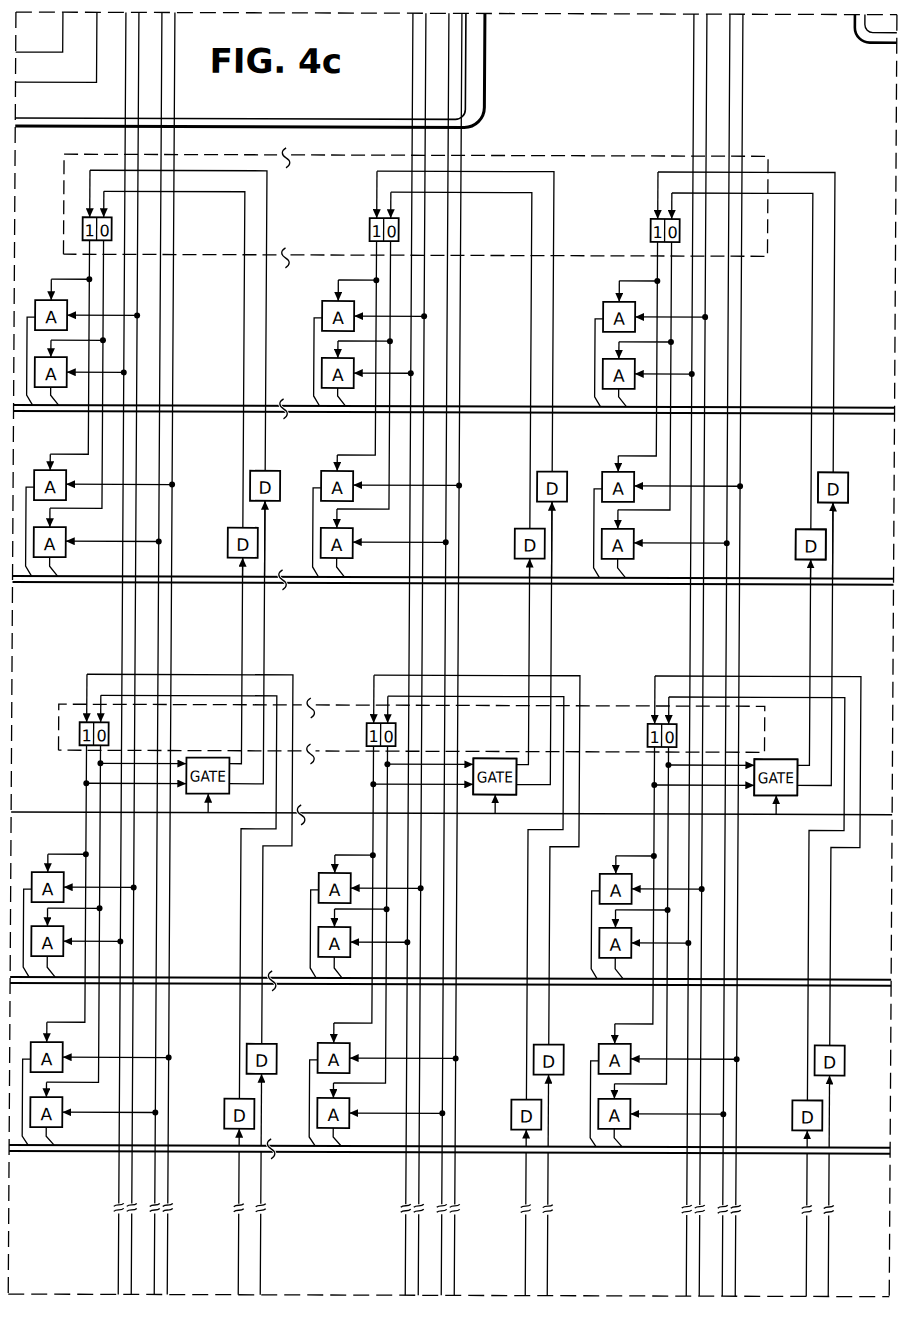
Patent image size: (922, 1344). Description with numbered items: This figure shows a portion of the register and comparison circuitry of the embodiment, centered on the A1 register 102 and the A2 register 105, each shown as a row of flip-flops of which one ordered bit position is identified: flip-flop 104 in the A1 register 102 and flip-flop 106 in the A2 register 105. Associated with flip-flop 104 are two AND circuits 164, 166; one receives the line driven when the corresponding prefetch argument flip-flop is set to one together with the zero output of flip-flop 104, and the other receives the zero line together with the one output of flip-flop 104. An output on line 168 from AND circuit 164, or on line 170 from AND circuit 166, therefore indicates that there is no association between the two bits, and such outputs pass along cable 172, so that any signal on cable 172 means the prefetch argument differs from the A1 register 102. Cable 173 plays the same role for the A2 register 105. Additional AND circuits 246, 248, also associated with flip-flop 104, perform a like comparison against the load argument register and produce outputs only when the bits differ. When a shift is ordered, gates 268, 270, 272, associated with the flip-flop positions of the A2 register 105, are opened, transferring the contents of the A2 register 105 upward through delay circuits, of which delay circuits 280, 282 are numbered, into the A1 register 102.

The A1 register 102 is at (65, 180).
The flip-flop 104 is at (84, 228).
The A2 register 105 is at (63, 704).
The flip-flop 106 is at (84, 742).
The AND circuit 164 is at (36, 310).
The AND circuit 166 is at (48, 281).
The output line 168 is at (60, 412).
The output line 170 is at (33, 412).
The cable 172 is at (222, 405).
The cable 173 is at (199, 977).
The AND circuit 246 is at (44, 470).
The AND circuit 248 is at (69, 554).
The gate 268 is at (228, 795).
The gate 270 is at (515, 795).
The gate 272 is at (796, 795).
The delay circuit 280 is at (851, 492).
The delay circuit 282 is at (829, 548).